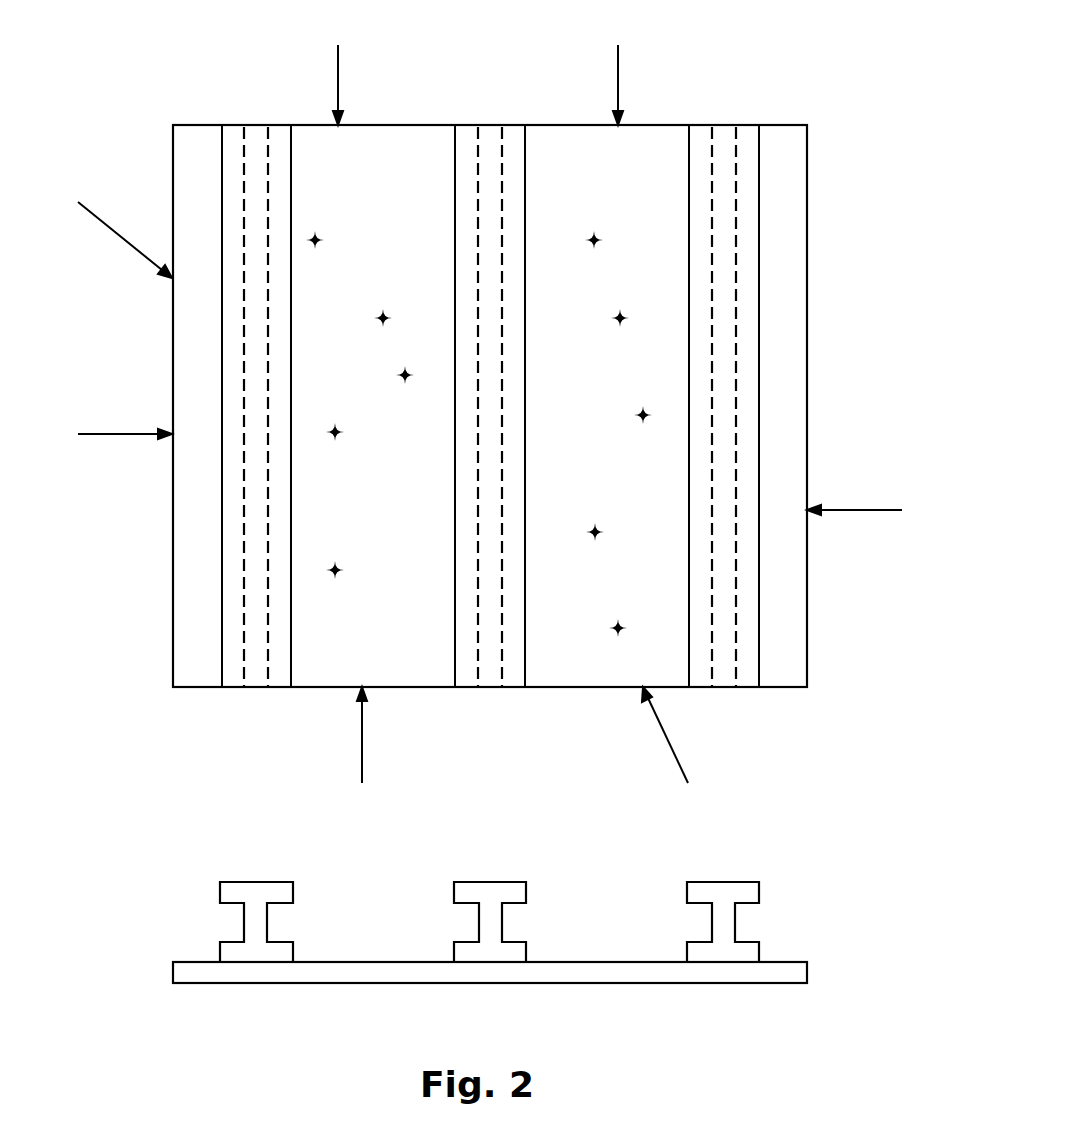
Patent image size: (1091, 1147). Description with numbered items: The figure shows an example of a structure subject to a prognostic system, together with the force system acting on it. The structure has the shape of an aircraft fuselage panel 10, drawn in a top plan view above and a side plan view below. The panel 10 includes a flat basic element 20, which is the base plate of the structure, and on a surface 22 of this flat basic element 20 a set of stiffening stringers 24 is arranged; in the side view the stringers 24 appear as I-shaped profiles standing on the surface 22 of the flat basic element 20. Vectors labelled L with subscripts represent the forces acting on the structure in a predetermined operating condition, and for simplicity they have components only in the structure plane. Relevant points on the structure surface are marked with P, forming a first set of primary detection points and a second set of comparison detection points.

The aircraft fuselage panel 10 is at (840, 143).
The flat basic element 20 is at (162, 662).
The surface 22 is at (368, 958).
The stiffening stringers 24 is at (253, 888).